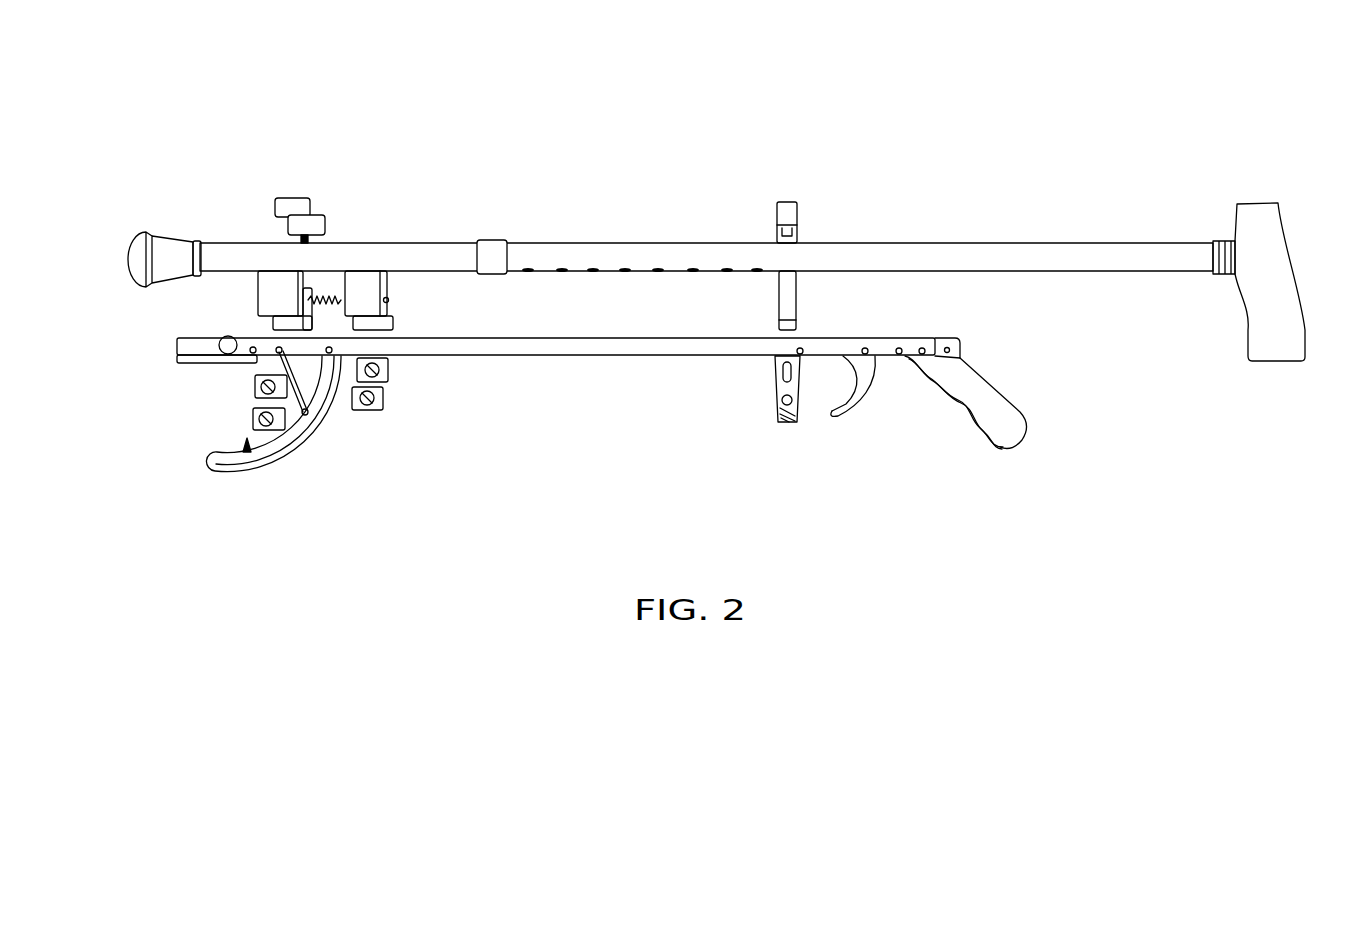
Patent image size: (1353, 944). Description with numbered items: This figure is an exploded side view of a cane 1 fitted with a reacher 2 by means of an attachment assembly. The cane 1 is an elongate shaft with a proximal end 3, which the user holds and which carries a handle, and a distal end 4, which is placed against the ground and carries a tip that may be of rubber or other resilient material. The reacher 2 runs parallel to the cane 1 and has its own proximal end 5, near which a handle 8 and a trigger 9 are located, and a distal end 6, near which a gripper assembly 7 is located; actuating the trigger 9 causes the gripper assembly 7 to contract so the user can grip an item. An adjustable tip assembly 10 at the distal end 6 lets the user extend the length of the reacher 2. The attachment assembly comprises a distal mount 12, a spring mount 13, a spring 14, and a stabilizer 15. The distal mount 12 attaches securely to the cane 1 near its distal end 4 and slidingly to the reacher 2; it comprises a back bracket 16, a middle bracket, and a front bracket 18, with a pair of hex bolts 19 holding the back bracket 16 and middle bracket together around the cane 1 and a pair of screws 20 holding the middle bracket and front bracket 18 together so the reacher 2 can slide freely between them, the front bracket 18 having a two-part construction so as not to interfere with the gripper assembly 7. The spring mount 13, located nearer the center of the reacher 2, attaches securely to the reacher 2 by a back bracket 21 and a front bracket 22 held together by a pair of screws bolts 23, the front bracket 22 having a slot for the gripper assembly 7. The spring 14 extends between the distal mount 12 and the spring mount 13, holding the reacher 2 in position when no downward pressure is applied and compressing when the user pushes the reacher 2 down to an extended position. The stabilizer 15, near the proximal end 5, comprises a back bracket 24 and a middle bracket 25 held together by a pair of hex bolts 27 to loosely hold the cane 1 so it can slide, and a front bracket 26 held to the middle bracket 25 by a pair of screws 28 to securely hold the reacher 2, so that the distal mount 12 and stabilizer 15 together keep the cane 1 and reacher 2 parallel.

The cane 1 is at (628, 268).
The reacher 2 is at (590, 357).
The proximal end 3 is at (1258, 212).
The distal end 4 is at (150, 234).
The proximal end 5 is at (905, 360).
The distal end 6 is at (178, 352).
The gripper assembly 7 is at (258, 468).
The handle 8 is at (1010, 428).
The trigger 9 is at (845, 412).
The adjustable tip assembly 10 is at (200, 364).
The distal mount 12 is at (282, 165).
The spring mount 13 is at (361, 218).
The spring 14 is at (322, 297).
The stabilizer 15 is at (782, 180).
The back bracket 16 is at (297, 197).
The front bracket 18 is at (247, 452).
The hex bolts 19 is at (290, 224).
The screws 20 is at (262, 406).
The back bracket 21 is at (365, 285).
The front bracket 22 is at (380, 412).
The screws bolts 23 is at (360, 412).
The back bracket 24 is at (796, 211).
The middle bracket 25 is at (796, 295).
The front bracket 26 is at (795, 422).
The hex bolts 27 is at (776, 233).
The screws 28 is at (778, 422).